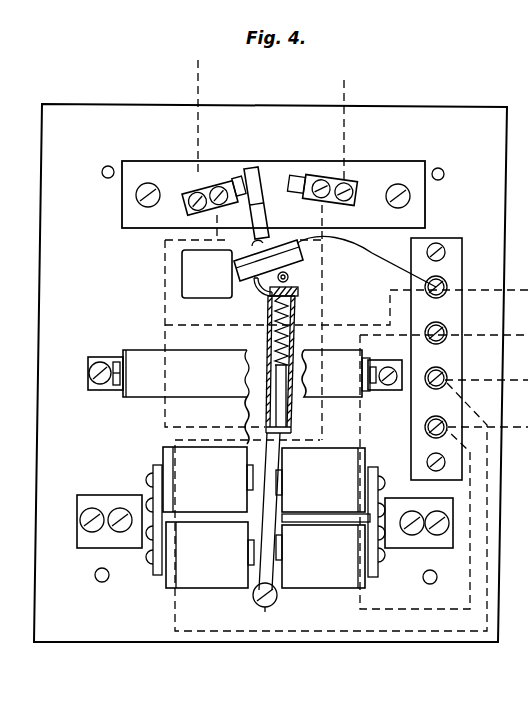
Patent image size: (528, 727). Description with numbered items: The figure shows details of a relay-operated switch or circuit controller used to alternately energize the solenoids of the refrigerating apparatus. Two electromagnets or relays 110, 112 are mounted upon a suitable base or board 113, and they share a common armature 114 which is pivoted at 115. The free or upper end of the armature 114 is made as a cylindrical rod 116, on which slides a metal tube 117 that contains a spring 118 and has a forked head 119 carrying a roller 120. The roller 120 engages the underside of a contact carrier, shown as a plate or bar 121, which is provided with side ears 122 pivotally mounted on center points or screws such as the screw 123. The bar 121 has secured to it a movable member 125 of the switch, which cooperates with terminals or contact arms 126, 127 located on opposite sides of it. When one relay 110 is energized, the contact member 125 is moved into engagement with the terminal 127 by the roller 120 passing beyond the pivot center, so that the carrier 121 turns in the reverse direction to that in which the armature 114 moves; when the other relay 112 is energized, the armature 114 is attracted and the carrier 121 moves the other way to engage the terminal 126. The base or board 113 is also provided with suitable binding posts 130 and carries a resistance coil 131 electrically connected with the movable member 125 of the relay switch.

The electromagnet or relay 110 is at (214, 580).
The electromagnet or relay 112 is at (319, 584).
The base or board 113 is at (100, 642).
The common armature 114 is at (280, 463).
The pivot 115 is at (266, 606).
The cylindrical rod 116 is at (271, 407).
The metal tube 117 is at (276, 344).
The spring 118 is at (290, 345).
The forked head 119 is at (270, 297).
The roller 120 is at (305, 277).
The contact carrier (plate or bar) 121 is at (300, 258).
The side ears 122 is at (299, 287).
The center point or screw 123 is at (262, 271).
The movable member of switch 125 is at (262, 207).
The terminal or contact arm 126 is at (206, 188).
The terminal or contact arm 127 is at (322, 184).
The binding posts 130 is at (436, 298).
The resistance coil 131 is at (206, 396).